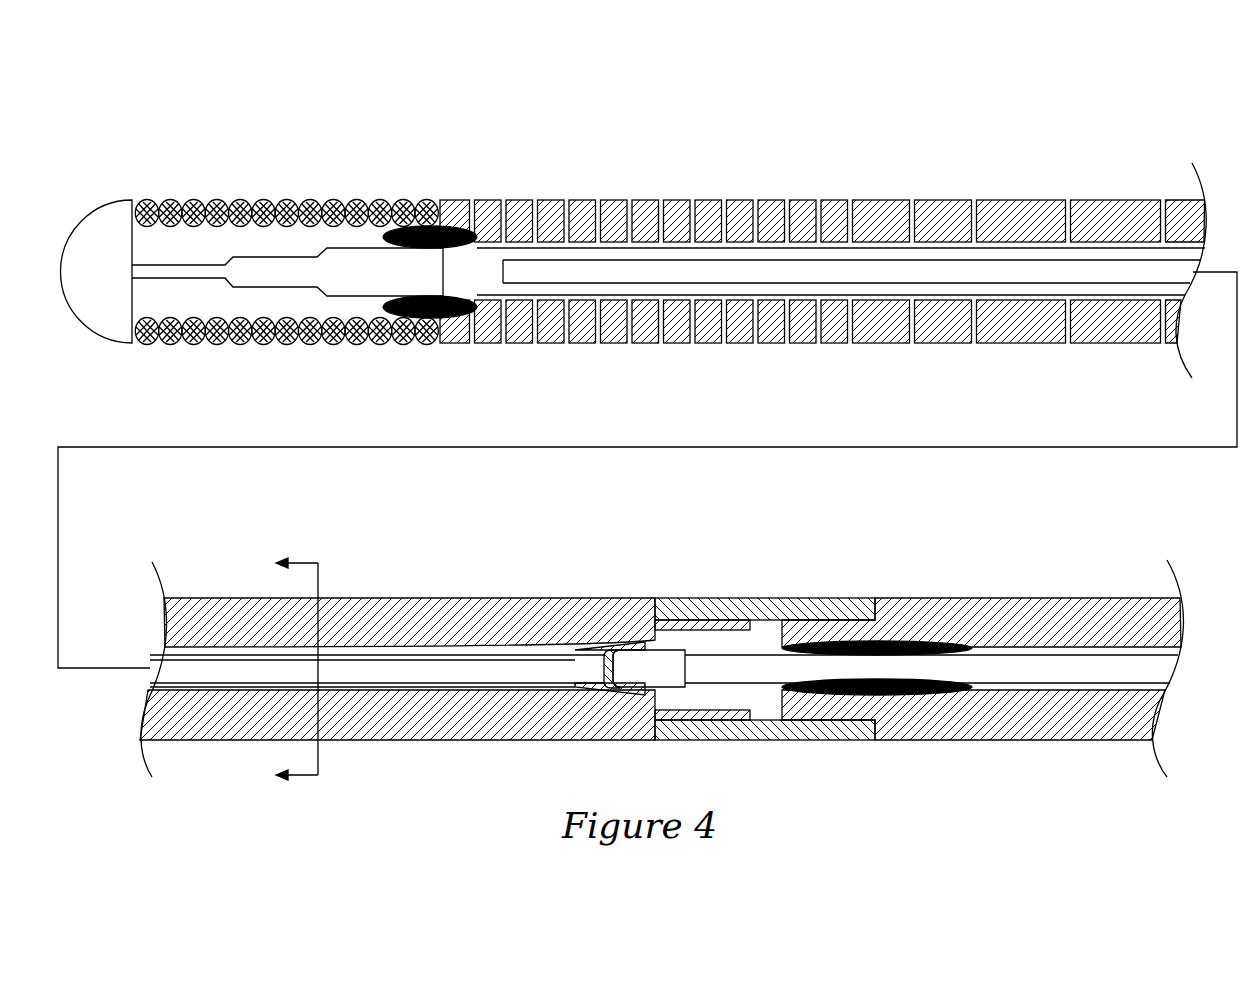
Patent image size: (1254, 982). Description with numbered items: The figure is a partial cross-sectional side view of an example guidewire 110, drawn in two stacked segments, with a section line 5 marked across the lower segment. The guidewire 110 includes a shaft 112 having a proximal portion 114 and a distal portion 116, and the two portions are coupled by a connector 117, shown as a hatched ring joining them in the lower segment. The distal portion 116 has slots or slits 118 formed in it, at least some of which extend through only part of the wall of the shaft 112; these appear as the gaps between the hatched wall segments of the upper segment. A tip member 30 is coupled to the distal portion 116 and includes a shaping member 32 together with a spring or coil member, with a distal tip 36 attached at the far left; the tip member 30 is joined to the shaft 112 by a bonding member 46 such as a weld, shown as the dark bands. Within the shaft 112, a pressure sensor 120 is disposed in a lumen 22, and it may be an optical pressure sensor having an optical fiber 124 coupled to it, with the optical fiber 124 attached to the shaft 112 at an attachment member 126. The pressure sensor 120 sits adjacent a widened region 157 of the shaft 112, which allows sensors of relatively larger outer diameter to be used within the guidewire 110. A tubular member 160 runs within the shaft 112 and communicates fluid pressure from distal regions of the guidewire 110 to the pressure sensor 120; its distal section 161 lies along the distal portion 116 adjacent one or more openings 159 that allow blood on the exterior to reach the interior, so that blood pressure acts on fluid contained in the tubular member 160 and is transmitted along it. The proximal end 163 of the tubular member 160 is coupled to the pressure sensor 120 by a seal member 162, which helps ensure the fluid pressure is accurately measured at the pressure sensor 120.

The guidewire 110 is at (821, 96).
The distal tip 36 is at (112, 216).
The tip member 30 is at (208, 198).
The shaping member 32 is at (268, 278).
The bonding member 46 is at (449, 203).
The openings 159 is at (531, 205).
The slots or slits 118 is at (822, 188).
The lumen 22 is at (743, 205).
The tubular member 160 is at (874, 257).
The distal section 161 is at (1030, 275).
The distal portion 116 is at (1020, 200).
The shaft 112 is at (1112, 196).
The proximal portion 114 is at (1027, 607).
The connector 117 is at (763, 603).
The seal member 162 is at (606, 650).
The proximal end 163 is at (583, 668).
The widened region 157 is at (612, 700).
The pressure sensor 120 is at (657, 676).
The optical fiber 124 is at (757, 672).
The attachment member 126 is at (905, 697).
The section line 5- 5 is at (287, 671).